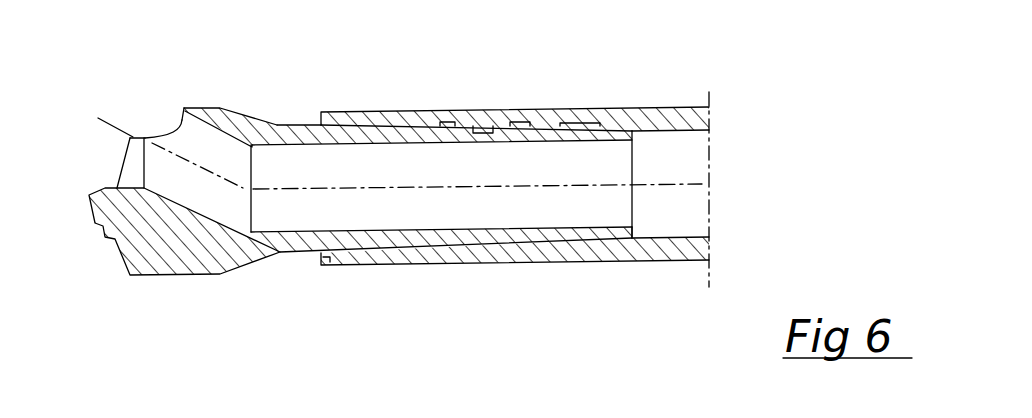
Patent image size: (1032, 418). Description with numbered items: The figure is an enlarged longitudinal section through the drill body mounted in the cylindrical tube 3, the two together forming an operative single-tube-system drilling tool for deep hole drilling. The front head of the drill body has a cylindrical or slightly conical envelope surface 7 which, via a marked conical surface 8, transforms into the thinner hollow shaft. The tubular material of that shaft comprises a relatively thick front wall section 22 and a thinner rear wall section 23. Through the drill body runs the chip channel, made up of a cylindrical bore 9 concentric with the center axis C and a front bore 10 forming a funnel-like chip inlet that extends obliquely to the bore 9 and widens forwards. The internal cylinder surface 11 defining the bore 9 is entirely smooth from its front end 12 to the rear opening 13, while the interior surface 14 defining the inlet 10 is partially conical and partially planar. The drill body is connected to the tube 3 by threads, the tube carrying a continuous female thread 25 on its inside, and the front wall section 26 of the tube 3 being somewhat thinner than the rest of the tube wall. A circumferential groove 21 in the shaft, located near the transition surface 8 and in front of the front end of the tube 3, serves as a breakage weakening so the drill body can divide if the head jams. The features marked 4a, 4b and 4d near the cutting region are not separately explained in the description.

The cylindrical tube 3 is at (598, 120).
The engagement portion 4a is at (465, 0).
The engagement portion 4b is at (546, 63).
The engagement portion 4d is at (419, 63).
The envelope surface 7 is at (205, 107).
The conical surface 8 is at (248, 108).
The bore 9 is at (414, 212).
The front bore 10 is at (222, 200).
The internal cylinder surface 11 is at (565, 222).
The front end 12 is at (253, 212).
The rear opening 13 is at (635, 207).
The interior surface 14 is at (213, 107).
The circumferential groove 21 is at (303, 122).
The front wall section 22 is at (345, 133).
The rear wall section 23 is at (538, 137).
The female thread 25 is at (485, 131).
The front wall section 26 is at (367, 117).
The center axis C is at (690, 180).